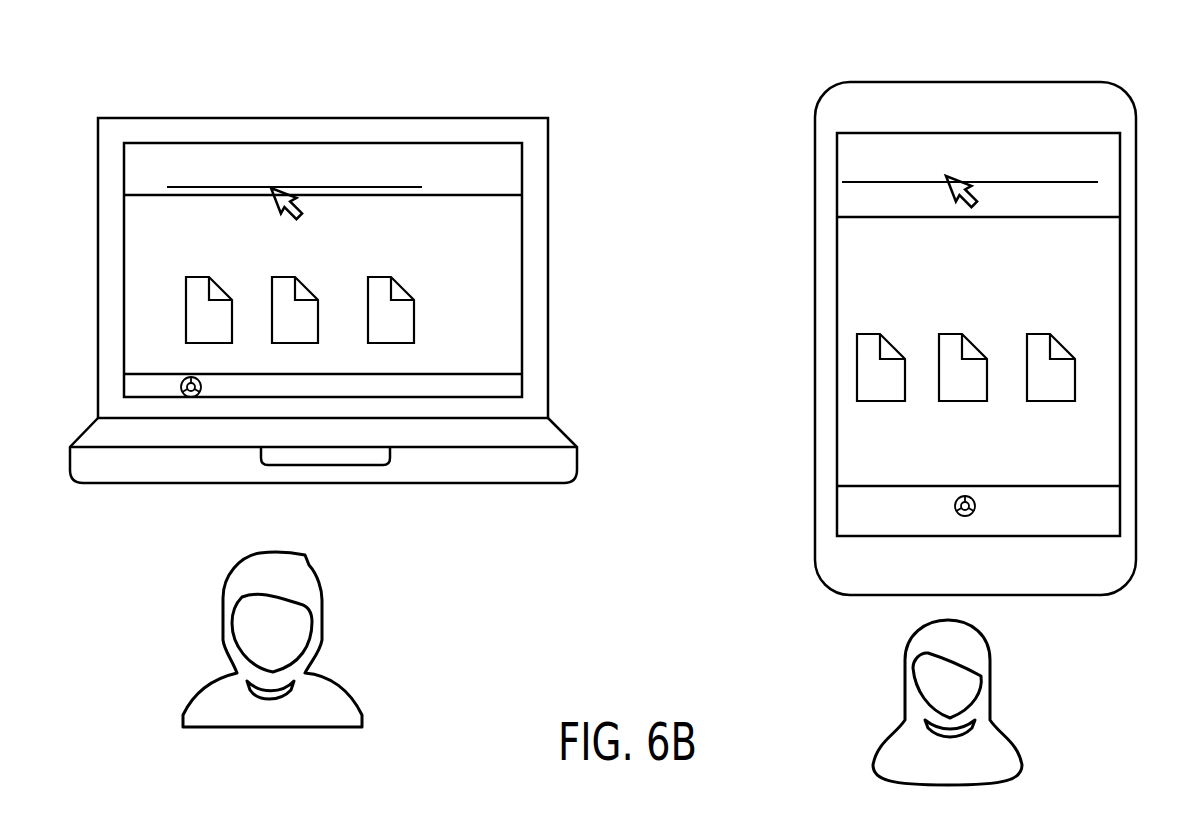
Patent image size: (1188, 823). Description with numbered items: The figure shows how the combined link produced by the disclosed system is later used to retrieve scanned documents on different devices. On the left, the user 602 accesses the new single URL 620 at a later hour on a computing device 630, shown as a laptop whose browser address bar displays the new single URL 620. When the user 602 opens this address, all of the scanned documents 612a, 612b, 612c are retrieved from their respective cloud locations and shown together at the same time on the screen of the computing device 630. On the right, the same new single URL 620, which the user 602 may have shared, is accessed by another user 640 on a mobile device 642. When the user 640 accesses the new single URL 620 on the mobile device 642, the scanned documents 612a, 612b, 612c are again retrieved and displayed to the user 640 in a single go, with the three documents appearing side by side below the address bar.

The user 602 is at (208, 585).
The scanned document 612a is at (193, 276).
The scanned document 612b is at (279, 276).
The scanned document 612c is at (376, 276).
The new single URL 620 is at (262, 147).
The computing device 630 is at (418, 113).
The other user 640 is at (872, 686).
The mobile device 642 is at (1035, 80).